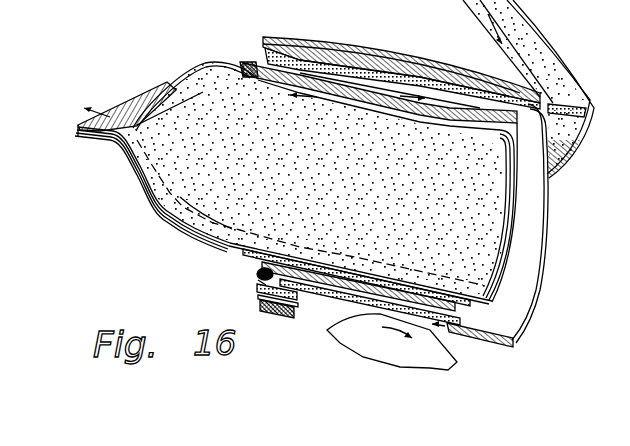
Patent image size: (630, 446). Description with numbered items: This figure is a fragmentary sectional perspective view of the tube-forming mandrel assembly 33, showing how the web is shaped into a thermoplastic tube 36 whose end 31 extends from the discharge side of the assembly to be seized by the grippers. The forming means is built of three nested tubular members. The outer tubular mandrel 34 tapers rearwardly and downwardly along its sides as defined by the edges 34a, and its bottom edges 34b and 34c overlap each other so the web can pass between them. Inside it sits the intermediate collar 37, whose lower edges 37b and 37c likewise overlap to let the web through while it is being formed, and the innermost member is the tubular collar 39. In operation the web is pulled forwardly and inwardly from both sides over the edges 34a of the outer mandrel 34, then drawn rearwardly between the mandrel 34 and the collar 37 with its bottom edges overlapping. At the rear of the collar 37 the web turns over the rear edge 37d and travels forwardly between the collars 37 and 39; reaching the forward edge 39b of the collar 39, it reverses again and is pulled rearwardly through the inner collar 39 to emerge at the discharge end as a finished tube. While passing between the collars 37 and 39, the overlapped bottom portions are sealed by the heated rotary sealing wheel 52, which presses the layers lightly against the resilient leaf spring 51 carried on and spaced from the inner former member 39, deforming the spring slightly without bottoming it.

The end of the thermoplastic tube 31 is at (87, 137).
The tube-forming mandrel assembly 33 is at (553, 232).
The outer tubular mandrel 34 is at (540, 86).
The edges of the outer mandrel 34a is at (557, 176).
The bottom edge of the outer mandrel 34b is at (276, 314).
The bottom edge of the outer mandrel 34c is at (257, 283).
The thermoplastic tube 36 is at (247, 68).
The collar 37 is at (348, 75).
The lower edge of the collar 37b is at (256, 273).
The lower edge of the collar 37c is at (258, 298).
The rear edge of the collar 37d is at (280, 54).
The tubular collar 39 is at (257, 64).
The forward edge of the inner collar 39b is at (507, 267).
The resilient leaf spring 51 is at (353, 295).
The heated rotary sealing wheel 52 is at (385, 353).